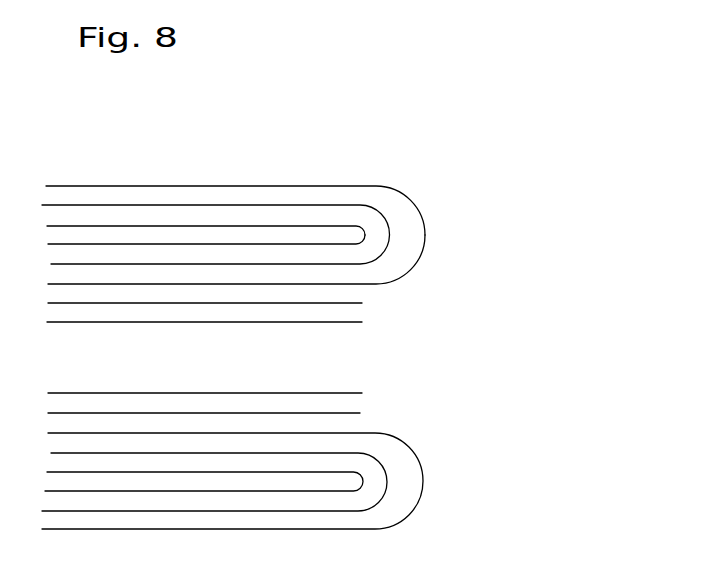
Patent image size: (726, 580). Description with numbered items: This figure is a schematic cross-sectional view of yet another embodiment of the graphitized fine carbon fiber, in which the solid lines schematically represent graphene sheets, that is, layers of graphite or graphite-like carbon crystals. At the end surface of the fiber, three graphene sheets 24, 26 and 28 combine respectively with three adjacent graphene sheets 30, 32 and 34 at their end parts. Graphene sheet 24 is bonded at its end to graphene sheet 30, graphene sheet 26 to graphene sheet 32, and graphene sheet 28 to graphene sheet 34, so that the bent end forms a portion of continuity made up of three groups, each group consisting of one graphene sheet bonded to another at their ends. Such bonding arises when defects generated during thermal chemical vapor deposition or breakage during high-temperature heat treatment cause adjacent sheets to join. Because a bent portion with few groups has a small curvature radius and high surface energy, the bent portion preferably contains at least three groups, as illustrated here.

The graphene sheet 24 is at (78, 173).
The graphene sheet 26 is at (132, 192).
The graphene sheet 28 is at (180, 214).
The graphene sheet 30 is at (236, 232).
The graphene sheet 32 is at (284, 252).
The graphene sheet 34 is at (338, 271).